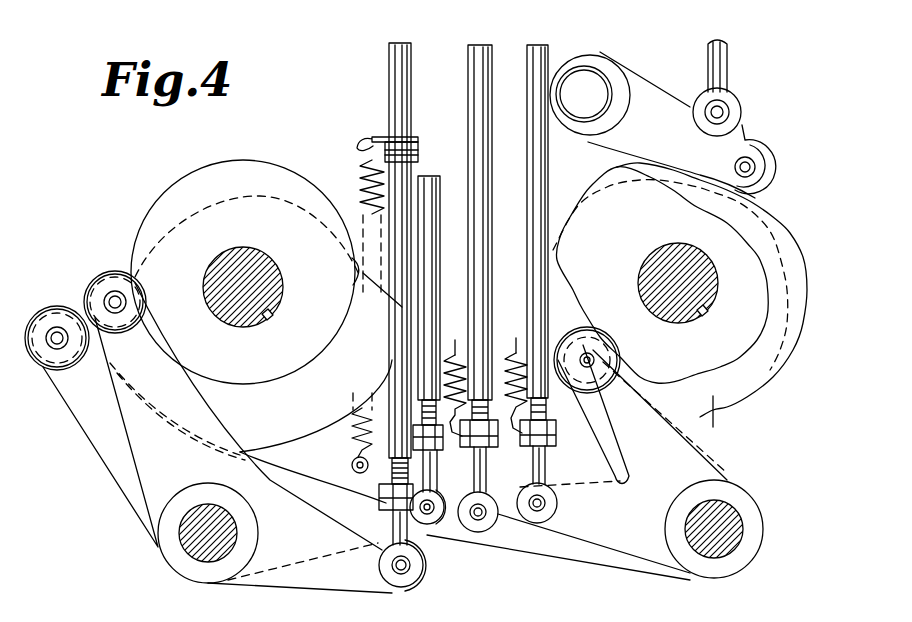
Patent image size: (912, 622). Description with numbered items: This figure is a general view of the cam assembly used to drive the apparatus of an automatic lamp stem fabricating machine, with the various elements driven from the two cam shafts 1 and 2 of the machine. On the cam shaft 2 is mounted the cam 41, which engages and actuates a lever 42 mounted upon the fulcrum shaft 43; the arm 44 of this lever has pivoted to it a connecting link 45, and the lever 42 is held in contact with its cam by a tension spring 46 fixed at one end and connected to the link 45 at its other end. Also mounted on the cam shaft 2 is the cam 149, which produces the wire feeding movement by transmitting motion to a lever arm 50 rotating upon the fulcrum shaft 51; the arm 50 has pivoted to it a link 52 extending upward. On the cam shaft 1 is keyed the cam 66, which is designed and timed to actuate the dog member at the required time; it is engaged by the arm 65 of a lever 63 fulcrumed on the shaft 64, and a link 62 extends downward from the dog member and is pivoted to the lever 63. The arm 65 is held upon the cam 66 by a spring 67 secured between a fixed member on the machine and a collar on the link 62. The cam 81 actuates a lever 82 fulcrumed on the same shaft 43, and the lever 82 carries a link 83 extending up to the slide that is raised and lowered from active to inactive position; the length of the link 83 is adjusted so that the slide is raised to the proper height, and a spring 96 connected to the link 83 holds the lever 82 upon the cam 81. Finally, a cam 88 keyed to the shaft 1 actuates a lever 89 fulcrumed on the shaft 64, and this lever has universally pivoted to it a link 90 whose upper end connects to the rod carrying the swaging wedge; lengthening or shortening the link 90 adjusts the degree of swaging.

The cam shaft 1 is at (268, 295).
The cam shaft 2 is at (700, 278).
The cam 41 is at (599, 186).
The lever 42 is at (610, 445).
The fulcrum shaft 43 is at (728, 538).
The arm 44 is at (590, 530).
The connecting link 45 is at (537, 112).
The tension spring 46 is at (514, 340).
The lever arm 50 is at (655, 102).
The fulcrum shaft 51 is at (582, 75).
The link 52 is at (722, 65).
The link 62 is at (393, 82).
The lever 63 is at (292, 583).
The shaft 64 is at (200, 541).
The arm 65 is at (137, 337).
The cam 66 is at (172, 190).
The spring 67 is at (348, 417).
The cam 81 is at (714, 420).
The lever 82 is at (513, 530).
The link 83 is at (480, 86).
The cam 88 is at (253, 197).
The lever 89 is at (112, 468).
The link 90 is at (428, 190).
The spring 96 is at (455, 340).
The cam 149 is at (748, 192).